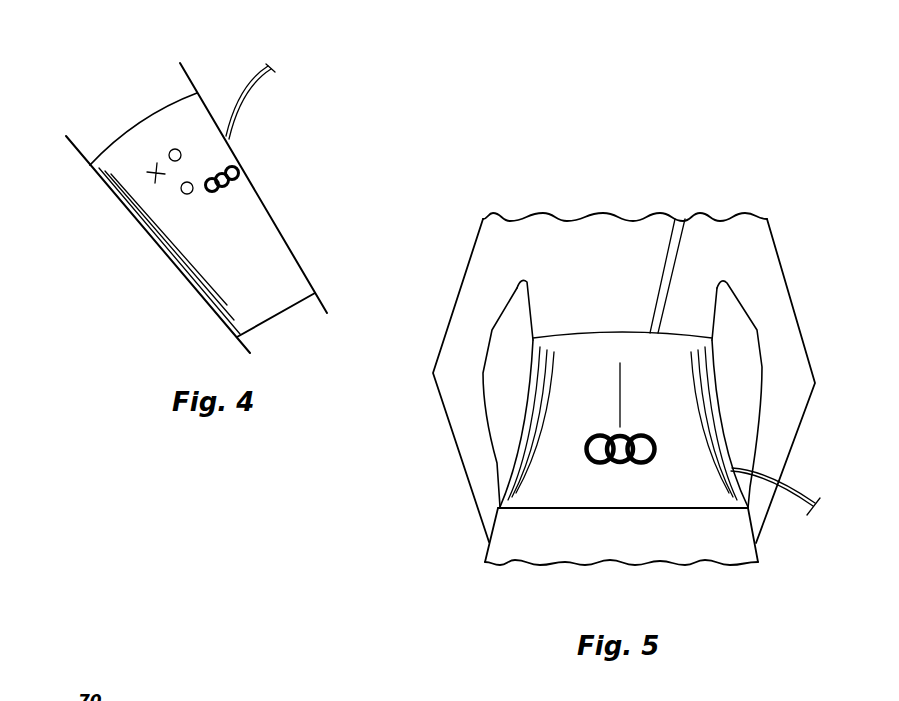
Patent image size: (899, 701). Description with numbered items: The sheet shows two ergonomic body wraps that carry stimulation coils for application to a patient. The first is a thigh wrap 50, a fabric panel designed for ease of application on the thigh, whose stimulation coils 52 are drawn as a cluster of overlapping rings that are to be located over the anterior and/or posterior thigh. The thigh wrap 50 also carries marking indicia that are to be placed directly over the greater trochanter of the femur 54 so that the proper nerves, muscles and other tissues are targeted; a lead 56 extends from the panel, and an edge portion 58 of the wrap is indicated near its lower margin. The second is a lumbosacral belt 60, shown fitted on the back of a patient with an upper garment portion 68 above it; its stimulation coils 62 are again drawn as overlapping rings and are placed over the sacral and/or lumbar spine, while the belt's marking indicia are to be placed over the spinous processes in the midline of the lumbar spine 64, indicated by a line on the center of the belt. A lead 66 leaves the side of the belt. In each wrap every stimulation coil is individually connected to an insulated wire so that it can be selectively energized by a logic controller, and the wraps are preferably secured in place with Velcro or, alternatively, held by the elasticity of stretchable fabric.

In FIG. 4, the thigh wrap 50 is at (269, 194).
In FIG. 4, the stimulation coils 52 is at (212, 196).
In FIG. 4, the greater trochanter of the femur 54 is at (150, 177).
In FIG. 4, the lead cable 56 is at (237, 107).
In FIG. 4, the panel edge with stitching 58 is at (307, 317).
In FIG. 5, the lumbosacral belt 60 is at (513, 458).
In FIG. 5, the stimulation coils 62 is at (593, 467).
In FIG. 5, the spinous processes in the midline of the lumbar spine 64 is at (622, 412).
In FIG. 5, the lead cable 66 is at (803, 492).
In FIG. 5, the upper garment portion 68 is at (612, 252).